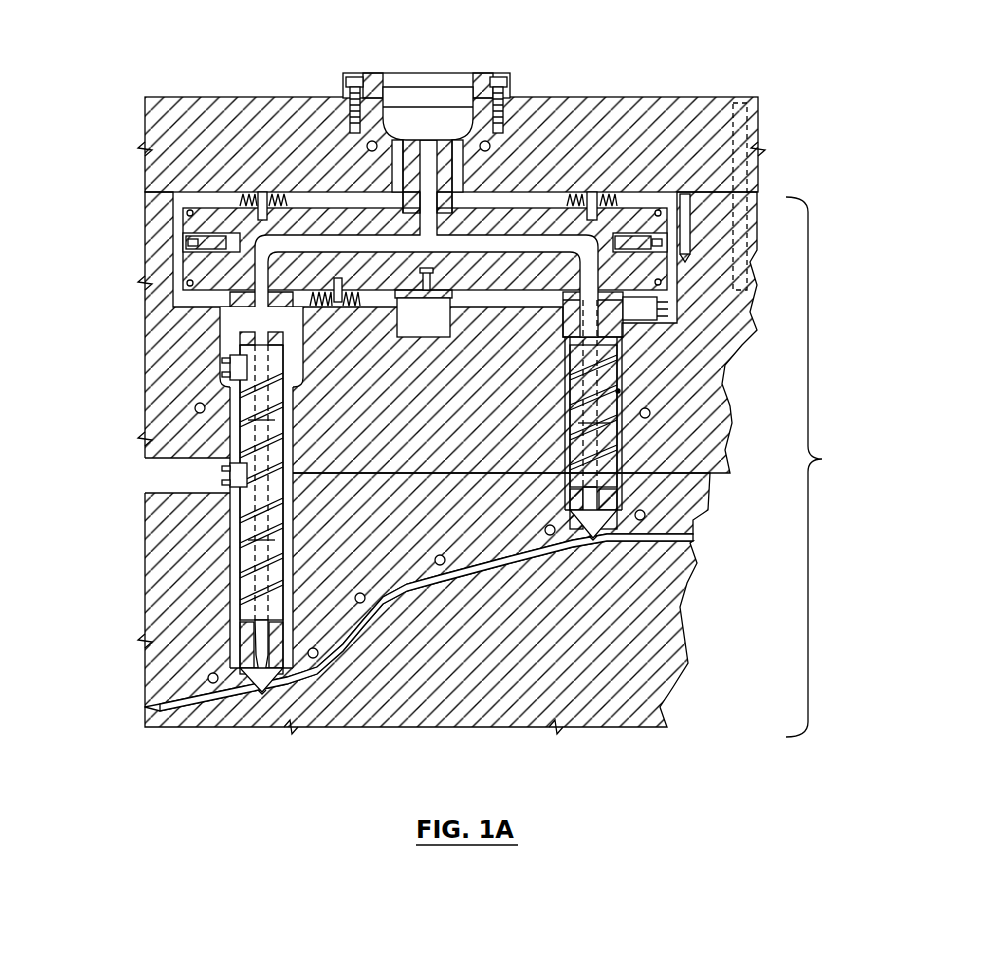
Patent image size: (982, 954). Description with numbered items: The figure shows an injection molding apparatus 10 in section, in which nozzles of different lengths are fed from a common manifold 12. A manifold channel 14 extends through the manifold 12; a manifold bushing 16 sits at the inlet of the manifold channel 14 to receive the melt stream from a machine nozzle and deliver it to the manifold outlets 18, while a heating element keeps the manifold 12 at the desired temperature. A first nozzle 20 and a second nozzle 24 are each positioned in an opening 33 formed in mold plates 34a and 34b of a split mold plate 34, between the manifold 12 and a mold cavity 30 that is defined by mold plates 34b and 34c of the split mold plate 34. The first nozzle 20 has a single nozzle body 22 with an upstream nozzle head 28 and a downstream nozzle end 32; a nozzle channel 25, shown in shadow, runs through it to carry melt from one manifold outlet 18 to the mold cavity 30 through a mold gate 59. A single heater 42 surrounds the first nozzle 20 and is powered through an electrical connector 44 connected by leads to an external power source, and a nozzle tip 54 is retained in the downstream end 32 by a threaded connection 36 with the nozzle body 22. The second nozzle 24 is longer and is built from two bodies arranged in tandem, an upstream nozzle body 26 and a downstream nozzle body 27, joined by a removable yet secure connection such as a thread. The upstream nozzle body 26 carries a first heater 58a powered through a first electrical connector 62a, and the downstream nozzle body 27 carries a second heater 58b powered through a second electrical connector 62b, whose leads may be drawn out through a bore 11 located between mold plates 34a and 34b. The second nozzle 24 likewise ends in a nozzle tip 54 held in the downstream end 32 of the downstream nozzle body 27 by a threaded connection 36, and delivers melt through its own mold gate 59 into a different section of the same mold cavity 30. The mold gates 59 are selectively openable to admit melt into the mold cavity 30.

The injection molding apparatus 10 is at (706, 58).
The bore 11 is at (228, 477).
The manifold 12 is at (565, 240).
The manifold channel 14 is at (503, 243).
The manifold bushing 16 is at (445, 115).
The manifold outlets 18 is at (240, 318).
The first nozzle 20 is at (620, 392).
The nozzle body 22 is at (608, 423).
The second nozzle 24 is at (230, 555).
The nozzle channel 25 is at (595, 463).
The upstream nozzle body 26 is at (277, 420).
The downstream nozzle body 27 is at (277, 540).
The upstream nozzle head 28 is at (568, 305).
The mold cavity 30 is at (598, 547).
The downstream nozzle end 32 is at (297, 697).
The opening 33 is at (288, 466).
The split mold plate 34 is at (817, 467).
The mold plate 34a is at (721, 345).
The mold plate 34b is at (695, 515).
The mold plate 34c is at (669, 578).
The threaded connection 36 is at (278, 637).
The heater 42 is at (568, 423).
The electrical connector 44 is at (673, 328).
The nozzle tip 54 is at (208, 678).
The first heater 58a is at (286, 398).
The second heater 58b is at (286, 563).
The mold gate 59 is at (262, 696).
The first electrical connector 62a is at (230, 365).
The second electrical connector 62b is at (230, 472).